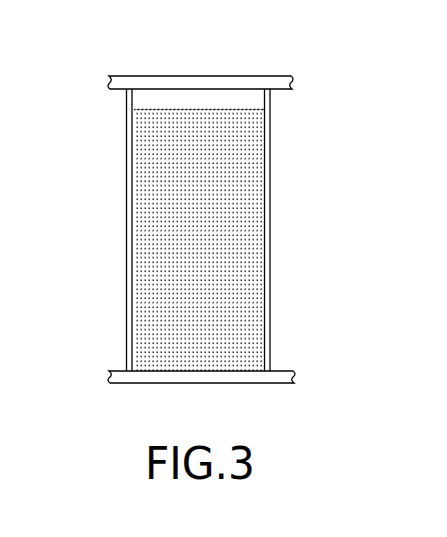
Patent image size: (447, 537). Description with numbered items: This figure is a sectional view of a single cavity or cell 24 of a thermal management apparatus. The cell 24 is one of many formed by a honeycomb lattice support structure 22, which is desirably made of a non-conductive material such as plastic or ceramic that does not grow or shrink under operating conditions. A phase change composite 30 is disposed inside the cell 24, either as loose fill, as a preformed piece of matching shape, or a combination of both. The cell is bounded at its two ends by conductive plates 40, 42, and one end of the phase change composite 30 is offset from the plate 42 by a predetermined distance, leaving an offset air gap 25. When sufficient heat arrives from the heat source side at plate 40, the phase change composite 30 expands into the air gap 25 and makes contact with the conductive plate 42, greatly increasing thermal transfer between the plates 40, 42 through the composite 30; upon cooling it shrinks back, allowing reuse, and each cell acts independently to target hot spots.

The honeycomb lattice support structure 22 is at (128, 232).
The cavity or cell 24 is at (139, 97).
The offset air gap 25 is at (194, 78).
The phase change composite 30 is at (245, 230).
The conductive plate 40 is at (255, 383).
The conductive plate 42 is at (270, 77).